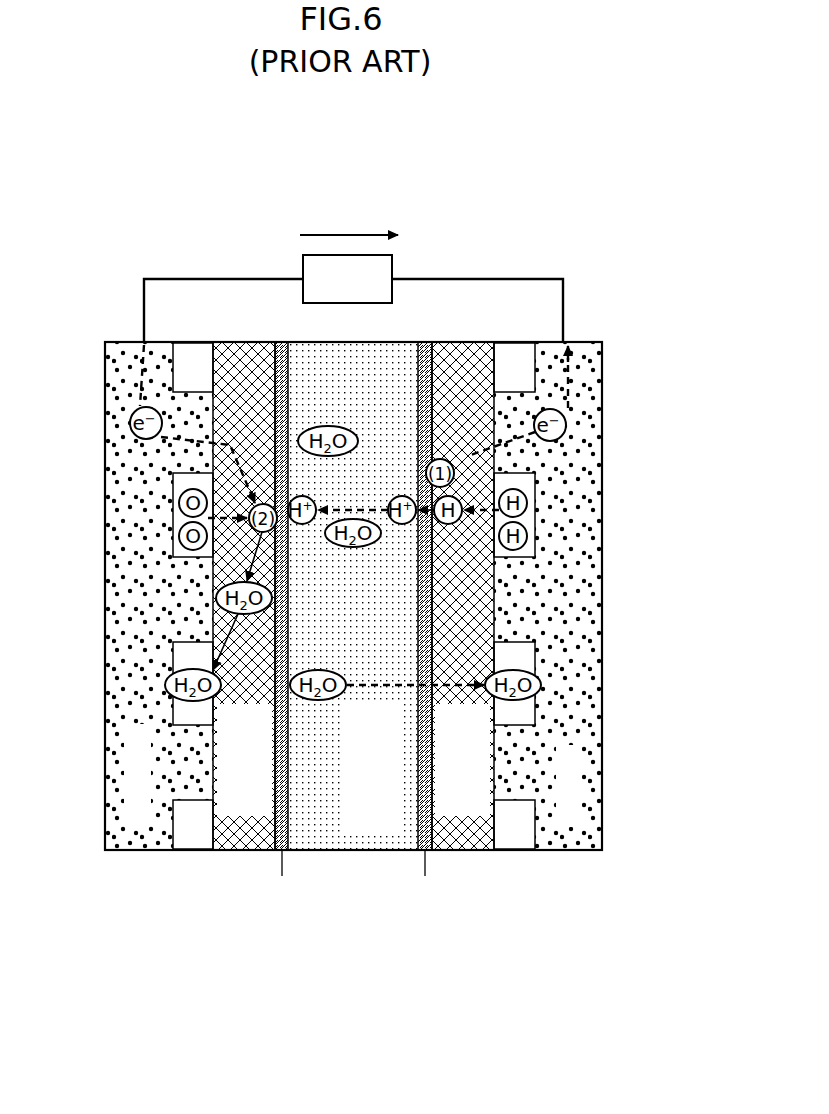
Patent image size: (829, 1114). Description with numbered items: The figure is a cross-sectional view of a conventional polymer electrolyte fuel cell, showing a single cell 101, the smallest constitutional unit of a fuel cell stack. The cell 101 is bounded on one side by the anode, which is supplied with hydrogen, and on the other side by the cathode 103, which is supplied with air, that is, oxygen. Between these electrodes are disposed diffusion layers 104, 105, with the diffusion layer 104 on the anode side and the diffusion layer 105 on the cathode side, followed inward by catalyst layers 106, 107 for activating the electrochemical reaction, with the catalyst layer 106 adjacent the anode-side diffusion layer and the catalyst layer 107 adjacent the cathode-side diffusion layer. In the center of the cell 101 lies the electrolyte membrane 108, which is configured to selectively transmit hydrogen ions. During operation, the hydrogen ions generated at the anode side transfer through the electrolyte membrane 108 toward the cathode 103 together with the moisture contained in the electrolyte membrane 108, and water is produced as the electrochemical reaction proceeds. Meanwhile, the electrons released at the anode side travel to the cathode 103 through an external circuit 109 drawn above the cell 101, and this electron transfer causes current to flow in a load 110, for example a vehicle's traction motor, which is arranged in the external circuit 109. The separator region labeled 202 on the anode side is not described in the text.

The cell 101 is at (657, 290).
The cathode 103 is at (105, 568).
The diffusion layer 104 is at (468, 843).
The diffusion layer 105 is at (237, 843).
The catalyst layer 106 is at (402, 843).
The catalyst layer 107 is at (256, 843).
The electrolyte membrane 108 is at (339, 843).
The external circuit 109 is at (216, 278).
The load 110 is at (392, 265).
The anode separator 202 is at (602, 698).